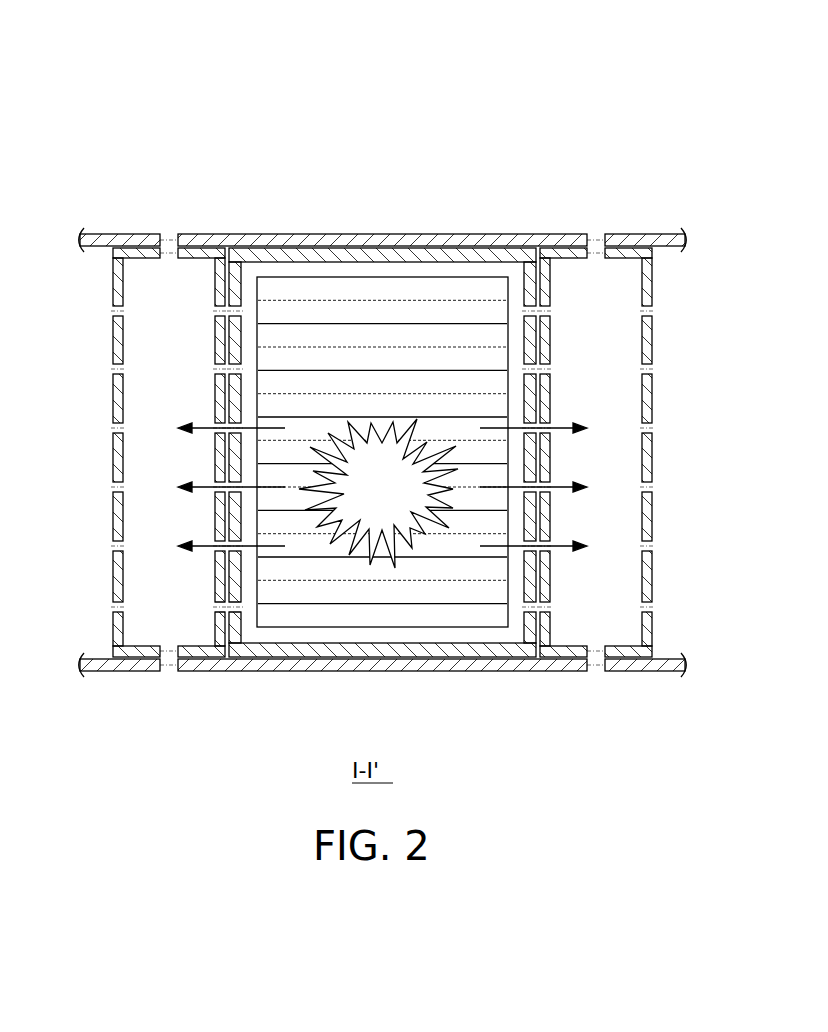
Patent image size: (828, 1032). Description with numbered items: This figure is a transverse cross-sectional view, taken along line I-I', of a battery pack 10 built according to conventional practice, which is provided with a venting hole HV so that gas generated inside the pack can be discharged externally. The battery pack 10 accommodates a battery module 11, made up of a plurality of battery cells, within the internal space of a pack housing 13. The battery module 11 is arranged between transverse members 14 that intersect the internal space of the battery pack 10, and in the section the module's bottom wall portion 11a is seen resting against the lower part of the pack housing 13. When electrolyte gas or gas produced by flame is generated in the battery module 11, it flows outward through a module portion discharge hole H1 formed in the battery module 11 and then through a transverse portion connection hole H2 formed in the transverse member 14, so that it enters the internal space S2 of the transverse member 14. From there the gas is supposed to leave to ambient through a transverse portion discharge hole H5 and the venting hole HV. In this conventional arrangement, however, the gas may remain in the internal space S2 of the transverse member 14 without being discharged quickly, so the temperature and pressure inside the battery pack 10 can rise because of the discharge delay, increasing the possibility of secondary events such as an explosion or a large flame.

The battery pack 10 is at (70, 155).
The battery module 11 is at (378, 231).
The cell case bottom wall 11a is at (398, 648).
The pack housing 13 is at (503, 240).
The transverse member 14 is at (113, 339).
The venting hole HV is at (168, 234).
The module portion discharge hole H1 is at (240, 609).
The transverse portion connection hole H2 is at (219, 608).
The transverse portion discharge hole H5 is at (167, 658).
The internal space of the transverse member S2 is at (602, 598).